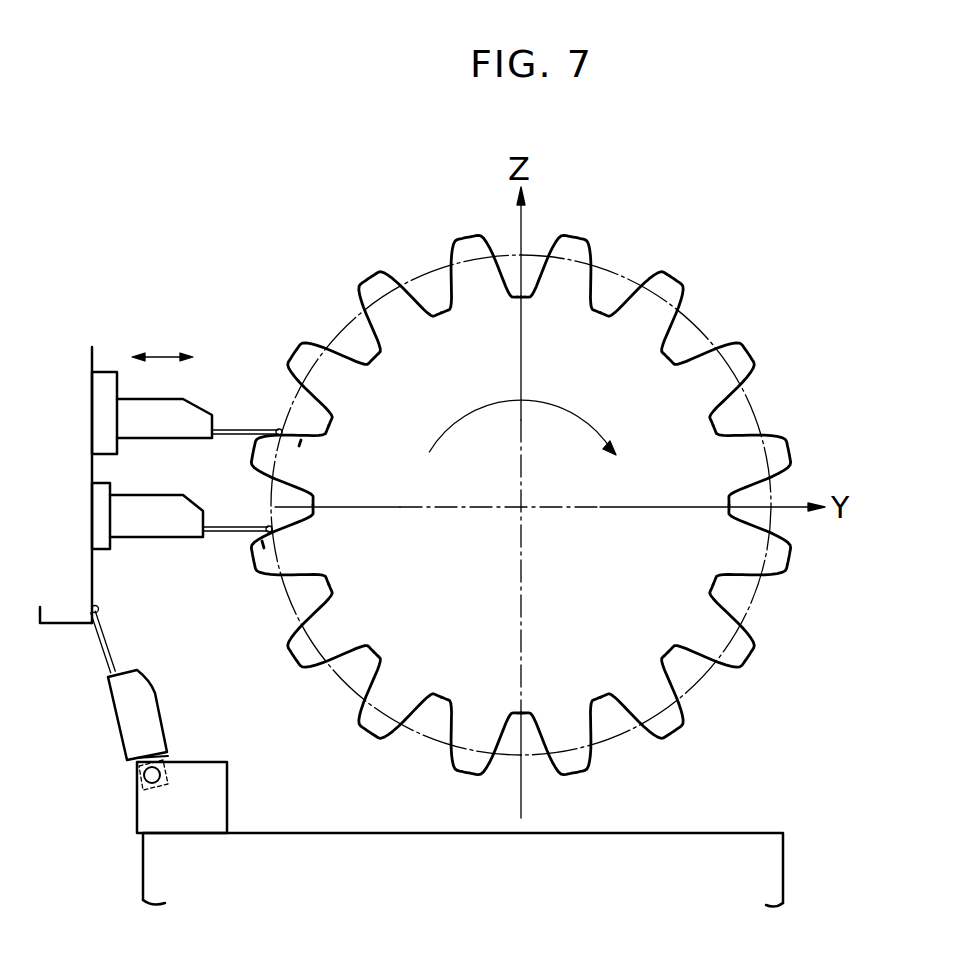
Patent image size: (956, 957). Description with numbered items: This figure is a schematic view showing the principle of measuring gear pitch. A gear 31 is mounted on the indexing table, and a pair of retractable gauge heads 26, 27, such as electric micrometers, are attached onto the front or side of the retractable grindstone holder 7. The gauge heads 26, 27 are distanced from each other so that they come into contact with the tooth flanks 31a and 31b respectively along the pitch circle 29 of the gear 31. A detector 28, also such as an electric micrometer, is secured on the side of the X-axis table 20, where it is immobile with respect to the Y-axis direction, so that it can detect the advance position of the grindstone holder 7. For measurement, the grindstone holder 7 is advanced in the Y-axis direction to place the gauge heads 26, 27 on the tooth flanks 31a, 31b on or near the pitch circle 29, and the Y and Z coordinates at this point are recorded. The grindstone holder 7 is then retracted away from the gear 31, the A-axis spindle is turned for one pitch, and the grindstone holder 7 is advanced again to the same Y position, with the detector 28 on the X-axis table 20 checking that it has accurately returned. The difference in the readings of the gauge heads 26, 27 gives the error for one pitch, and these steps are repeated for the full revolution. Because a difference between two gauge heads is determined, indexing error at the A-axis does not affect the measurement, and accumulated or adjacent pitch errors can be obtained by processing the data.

The grindstone holder 7 is at (78, 350).
The X-axis table 20 is at (340, 884).
The gauge head 26 is at (212, 416).
The gauge head 27 is at (183, 538).
The detector 28 is at (118, 722).
The pitch circle 29 is at (703, 680).
The gear 31 is at (702, 610).
The tooth flank 31a is at (297, 443).
The tooth flank 31b is at (247, 538).